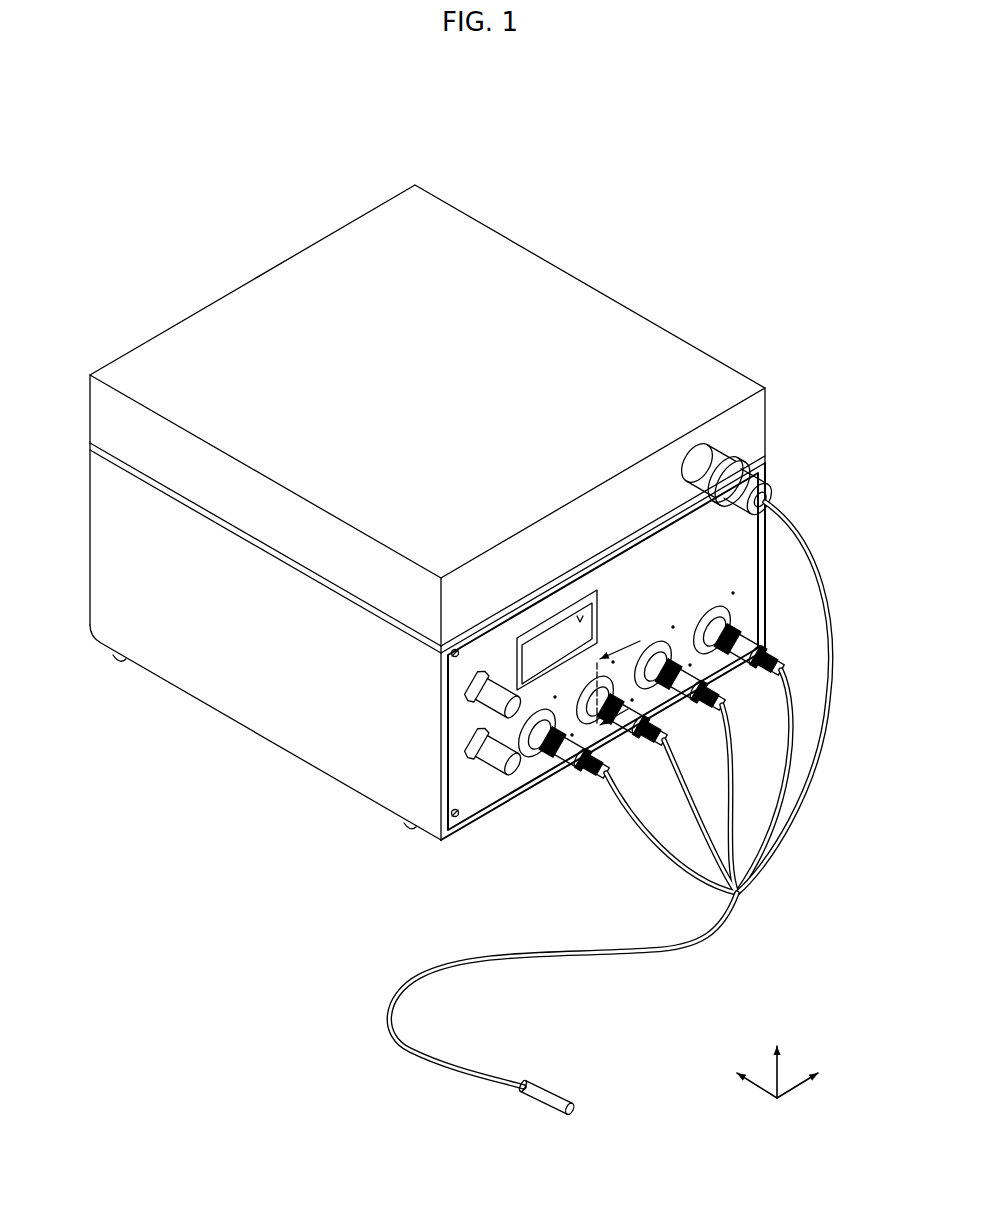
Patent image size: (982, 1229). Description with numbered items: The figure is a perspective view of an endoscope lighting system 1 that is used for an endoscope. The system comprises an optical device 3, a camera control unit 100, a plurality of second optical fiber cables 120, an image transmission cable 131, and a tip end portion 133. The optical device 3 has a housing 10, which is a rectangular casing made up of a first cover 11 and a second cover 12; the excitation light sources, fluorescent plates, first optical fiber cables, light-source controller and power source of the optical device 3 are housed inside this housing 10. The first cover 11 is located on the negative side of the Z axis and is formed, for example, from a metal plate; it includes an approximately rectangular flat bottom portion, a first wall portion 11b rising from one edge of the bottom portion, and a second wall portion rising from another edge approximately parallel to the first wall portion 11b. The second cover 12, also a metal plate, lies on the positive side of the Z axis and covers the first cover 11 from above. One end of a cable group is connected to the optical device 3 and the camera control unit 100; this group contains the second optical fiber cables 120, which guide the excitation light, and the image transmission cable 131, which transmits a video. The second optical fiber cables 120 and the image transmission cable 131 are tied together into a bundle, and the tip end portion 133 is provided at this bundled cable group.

The endoscope lighting system 1 is at (702, 259).
The camera control unit 100 is at (149, 332).
The optical device 3 is at (201, 708).
The housing 10 is at (318, 842).
The first cover 11 is at (472, 793).
The first wall portion 11b is at (487, 784).
The second cover 12 is at (378, 772).
The second optical fiber cable 120 is at (623, 798).
The image transmission cable 131 is at (792, 520).
The tip end portion 133 is at (559, 1081).